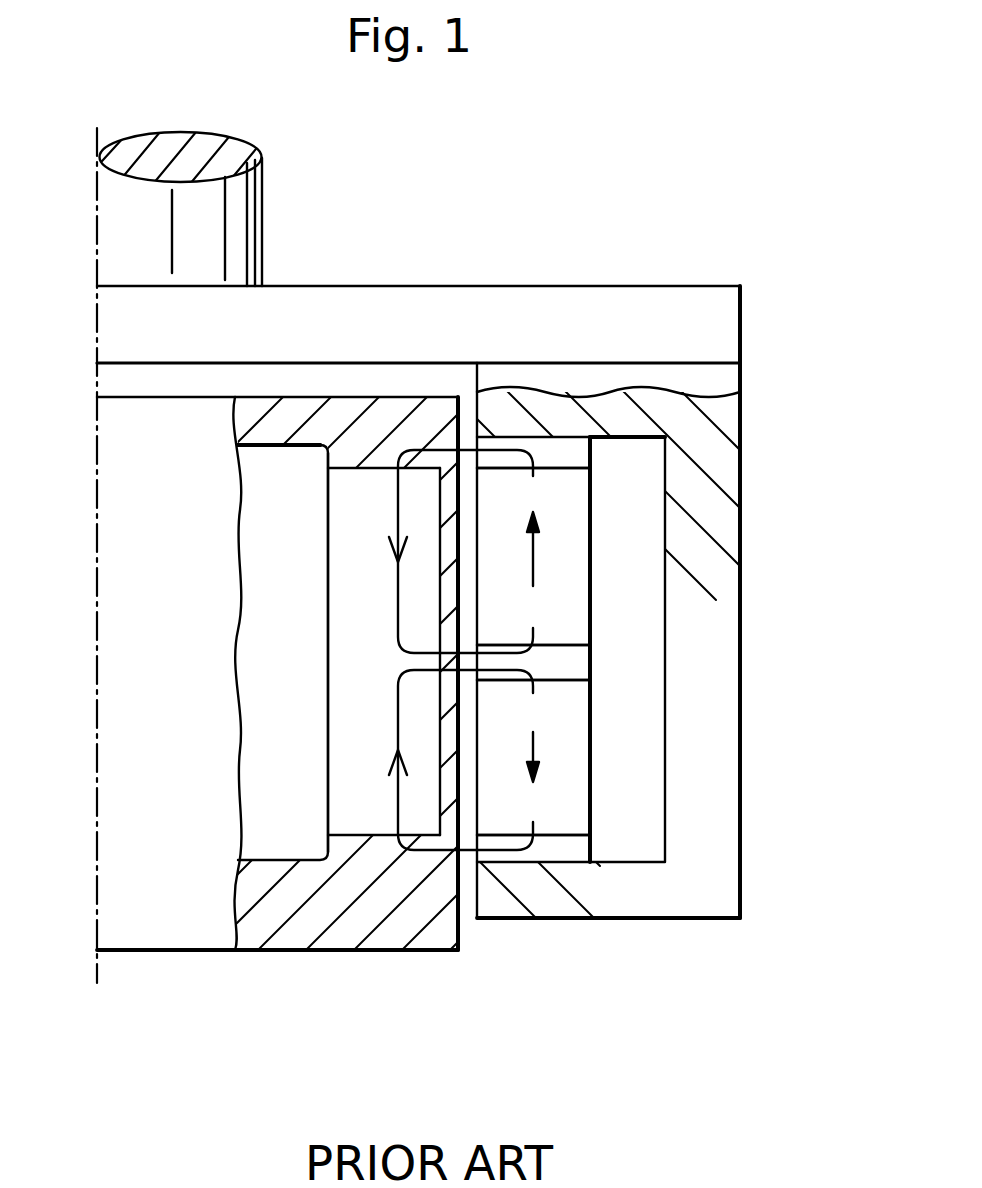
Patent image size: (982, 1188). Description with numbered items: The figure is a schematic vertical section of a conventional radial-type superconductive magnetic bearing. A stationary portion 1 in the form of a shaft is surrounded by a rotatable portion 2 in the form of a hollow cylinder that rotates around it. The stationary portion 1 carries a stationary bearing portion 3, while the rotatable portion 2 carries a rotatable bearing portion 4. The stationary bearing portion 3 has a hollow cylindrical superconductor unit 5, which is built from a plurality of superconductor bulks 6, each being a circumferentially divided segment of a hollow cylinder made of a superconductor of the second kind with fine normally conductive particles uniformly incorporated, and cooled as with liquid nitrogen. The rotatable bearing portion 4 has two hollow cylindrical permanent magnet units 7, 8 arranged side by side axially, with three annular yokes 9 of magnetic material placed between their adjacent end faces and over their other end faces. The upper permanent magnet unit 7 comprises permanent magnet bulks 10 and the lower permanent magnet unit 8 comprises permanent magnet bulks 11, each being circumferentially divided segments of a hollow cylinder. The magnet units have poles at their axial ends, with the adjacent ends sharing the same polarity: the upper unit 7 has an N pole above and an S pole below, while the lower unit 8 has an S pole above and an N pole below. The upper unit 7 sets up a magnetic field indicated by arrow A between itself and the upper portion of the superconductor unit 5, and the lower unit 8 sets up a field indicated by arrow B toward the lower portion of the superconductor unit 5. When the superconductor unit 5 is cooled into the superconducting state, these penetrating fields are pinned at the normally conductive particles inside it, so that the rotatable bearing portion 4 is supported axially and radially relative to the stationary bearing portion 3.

The stationary portion 1 is at (365, 932).
The rotatable portion 2 is at (723, 903).
The stationary bearing portion 3 is at (322, 666).
The rotatable bearing portion 4 is at (618, 633).
The superconductor unit 5 is at (342, 501).
The superconductor bulks 6 is at (342, 583).
The upper permanent magnet unit 7 is at (578, 530).
The lower permanent magnet unit 8 is at (580, 812).
The annular yokes 9 is at (580, 452).
The permanent magnet bulks 10 is at (580, 594).
The permanent magnet bulks 11 is at (580, 758).
The magnetic field arrow A is at (397, 617).
The magnetic field arrow B is at (397, 722).